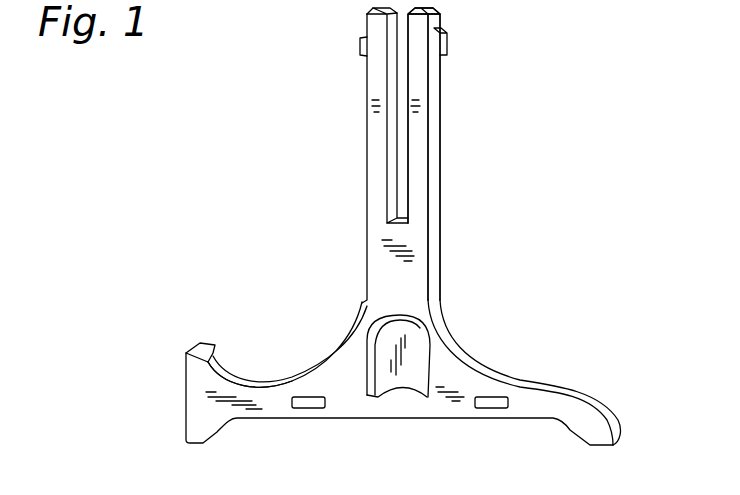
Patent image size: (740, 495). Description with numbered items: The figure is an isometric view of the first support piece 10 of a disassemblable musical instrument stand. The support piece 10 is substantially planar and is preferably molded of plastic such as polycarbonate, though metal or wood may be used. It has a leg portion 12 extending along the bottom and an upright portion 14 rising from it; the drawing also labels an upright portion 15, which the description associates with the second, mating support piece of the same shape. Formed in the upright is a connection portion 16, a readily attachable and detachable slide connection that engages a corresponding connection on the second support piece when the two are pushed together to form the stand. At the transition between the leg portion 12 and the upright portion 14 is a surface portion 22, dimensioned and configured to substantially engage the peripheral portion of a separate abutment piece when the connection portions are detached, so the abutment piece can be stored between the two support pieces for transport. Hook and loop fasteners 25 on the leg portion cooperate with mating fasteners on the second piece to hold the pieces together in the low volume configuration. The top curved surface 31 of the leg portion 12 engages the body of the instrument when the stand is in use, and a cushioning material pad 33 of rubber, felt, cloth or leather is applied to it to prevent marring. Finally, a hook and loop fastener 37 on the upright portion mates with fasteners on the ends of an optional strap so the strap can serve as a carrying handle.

The first support piece 10 is at (367, 263).
The leg portion 12 is at (213, 418).
The upright portion 14 is at (413, 143).
The upright portion 15 is at (295, 380).
The first connection portion 16 is at (405, 86).
The first surface portion 22 is at (408, 353).
The hook and loop fastener 25 is at (307, 408).
The top curved surface 31 is at (261, 364).
The cushioning material pad 33 is at (233, 370).
The hook and loop fastener 37 is at (360, 44).